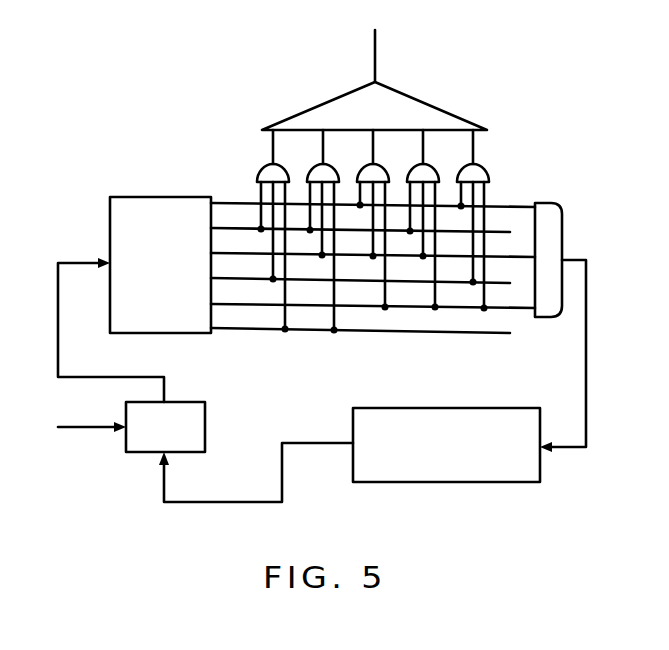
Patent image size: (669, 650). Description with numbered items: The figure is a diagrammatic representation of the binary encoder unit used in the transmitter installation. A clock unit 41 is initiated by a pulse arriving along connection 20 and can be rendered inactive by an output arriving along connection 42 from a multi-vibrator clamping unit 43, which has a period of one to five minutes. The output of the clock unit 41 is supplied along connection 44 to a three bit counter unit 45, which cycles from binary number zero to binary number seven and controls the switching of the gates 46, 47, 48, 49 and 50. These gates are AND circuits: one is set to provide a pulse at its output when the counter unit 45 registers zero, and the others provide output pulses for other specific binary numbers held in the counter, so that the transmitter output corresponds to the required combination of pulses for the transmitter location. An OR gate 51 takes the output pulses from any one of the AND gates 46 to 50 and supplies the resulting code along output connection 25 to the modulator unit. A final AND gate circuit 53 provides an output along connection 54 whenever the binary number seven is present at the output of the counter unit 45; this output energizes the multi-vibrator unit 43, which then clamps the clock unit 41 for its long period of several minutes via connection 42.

The connection 20 is at (74, 427).
The output connection 25 is at (375, 50).
The clock unit 41 is at (205, 423).
The connection 42 is at (310, 445).
The multi-vibrator clamping unit 43 is at (457, 482).
The connection 44 is at (105, 377).
The three bit counter unit 45 is at (128, 197).
The gate 46 is at (295, 155).
The gate 47 is at (345, 155).
The gate 48 is at (395, 155).
The gate 49 is at (445, 155).
The gate 50 is at (486, 165).
The OR gate 51 is at (413, 97).
The final AND gate circuit 53 is at (562, 242).
The connection 54 is at (586, 357).